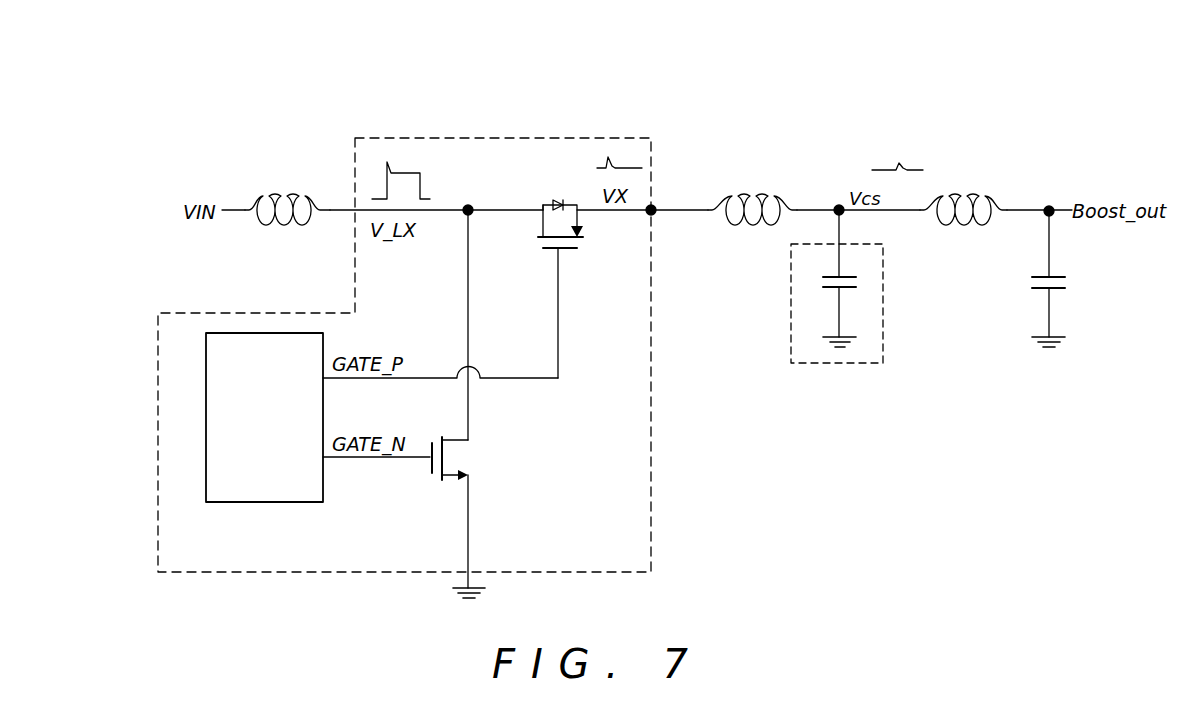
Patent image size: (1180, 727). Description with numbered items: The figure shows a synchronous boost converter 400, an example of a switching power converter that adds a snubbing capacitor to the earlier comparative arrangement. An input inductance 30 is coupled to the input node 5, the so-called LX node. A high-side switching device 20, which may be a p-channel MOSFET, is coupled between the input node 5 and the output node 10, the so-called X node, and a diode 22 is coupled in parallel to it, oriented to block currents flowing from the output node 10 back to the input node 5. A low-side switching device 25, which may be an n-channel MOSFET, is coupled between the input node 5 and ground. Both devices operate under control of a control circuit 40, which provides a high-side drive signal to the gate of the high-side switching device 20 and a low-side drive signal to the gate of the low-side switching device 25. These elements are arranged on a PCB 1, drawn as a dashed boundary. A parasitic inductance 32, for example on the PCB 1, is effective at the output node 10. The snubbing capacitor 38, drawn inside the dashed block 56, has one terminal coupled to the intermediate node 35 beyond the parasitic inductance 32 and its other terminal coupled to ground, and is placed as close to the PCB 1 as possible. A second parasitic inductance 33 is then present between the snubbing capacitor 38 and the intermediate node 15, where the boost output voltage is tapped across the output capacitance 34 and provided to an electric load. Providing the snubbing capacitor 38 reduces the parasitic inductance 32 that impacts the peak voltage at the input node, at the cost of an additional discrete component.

The synchronous boost converter 400 is at (268, 76).
The PCB 1 is at (283, 572).
The input inductance 30 is at (284, 194).
The input node 5 is at (466, 216).
The high-side switching device 20 is at (538, 241).
The diode 22 is at (562, 199).
The output node 10 is at (655, 216).
The parasitic inductance 32 is at (752, 194).
The intermediate node 35 is at (838, 205).
The capacitor block 56 is at (845, 364).
The snubbing capacitor 38 is at (822, 284).
The second parasitic inductance 33 is at (962, 195).
The intermediate node 15 is at (1048, 205).
The output capacitance 34 is at (1030, 287).
The control circuit 40 is at (265, 503).
The low-side switching device 25 is at (458, 455).